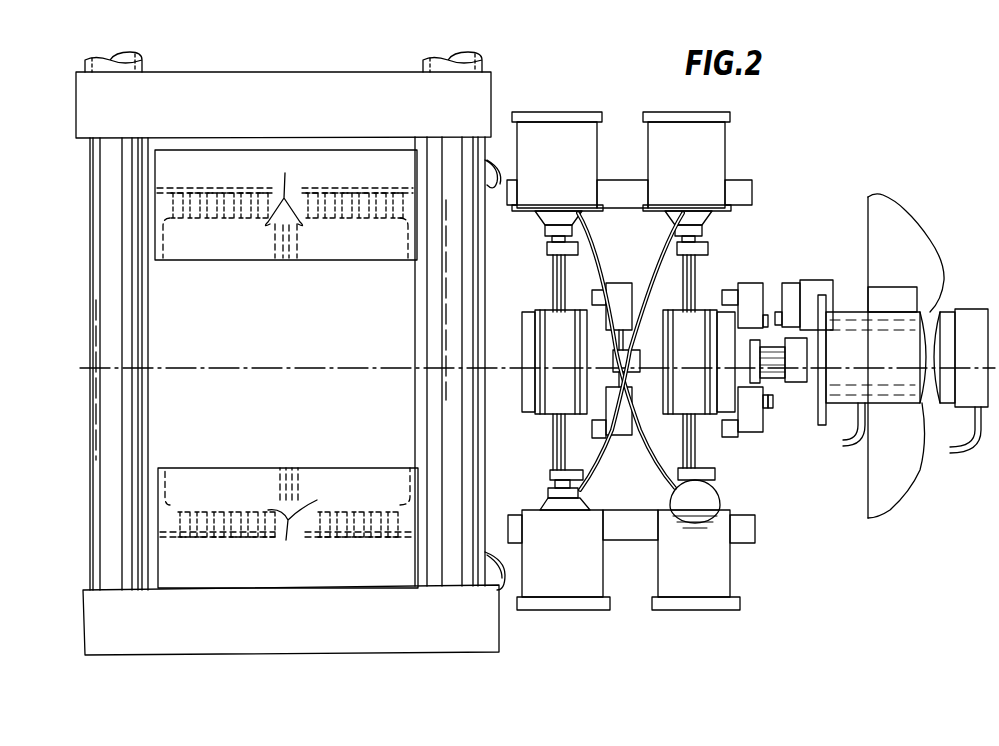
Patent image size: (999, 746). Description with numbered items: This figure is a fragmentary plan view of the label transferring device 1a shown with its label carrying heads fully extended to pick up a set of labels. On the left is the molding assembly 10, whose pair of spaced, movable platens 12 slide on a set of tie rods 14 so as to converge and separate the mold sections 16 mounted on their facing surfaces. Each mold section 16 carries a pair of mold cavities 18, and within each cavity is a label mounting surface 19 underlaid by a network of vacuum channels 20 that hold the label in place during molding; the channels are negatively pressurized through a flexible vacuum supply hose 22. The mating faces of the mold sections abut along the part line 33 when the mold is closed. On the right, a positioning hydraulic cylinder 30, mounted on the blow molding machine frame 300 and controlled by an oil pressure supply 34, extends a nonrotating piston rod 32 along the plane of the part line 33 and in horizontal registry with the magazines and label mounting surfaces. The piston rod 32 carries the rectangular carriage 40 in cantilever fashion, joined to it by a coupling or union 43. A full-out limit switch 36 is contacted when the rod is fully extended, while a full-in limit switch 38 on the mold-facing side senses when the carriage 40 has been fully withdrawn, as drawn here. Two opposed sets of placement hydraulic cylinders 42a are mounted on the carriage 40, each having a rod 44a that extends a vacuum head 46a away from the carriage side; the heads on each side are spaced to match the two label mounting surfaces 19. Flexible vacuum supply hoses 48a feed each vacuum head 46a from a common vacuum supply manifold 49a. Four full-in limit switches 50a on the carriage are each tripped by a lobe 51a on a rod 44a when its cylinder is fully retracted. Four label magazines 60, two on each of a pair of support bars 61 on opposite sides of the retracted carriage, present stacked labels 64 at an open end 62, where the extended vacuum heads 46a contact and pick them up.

The transferring device 1a is at (788, 165).
The molding assembly 10 is at (350, 70).
The platens 12 is at (222, 86).
The tie rods 14 is at (140, 422).
The mold sections 16 is at (286, 262).
The mold cavities 18 is at (212, 262).
The label mounting surface 19 is at (291, 356).
The vacuum channels 20 is at (203, 190).
The flexible vacuum supply hose 22 is at (495, 160).
The positioning hydraulic cylinder 30 is at (897, 403).
The piston rod 32 is at (778, 383).
The part line 33 is at (295, 365).
The oil pressure supply 34 is at (960, 447).
The full-out limit switch 36 is at (885, 287).
The full-in limit switch 38 is at (810, 283).
The carriage 40 is at (518, 385).
The placement hydraulic cylinders 42a is at (537, 310).
The coupling or union 43 is at (768, 408).
The rod 44a is at (548, 250).
The vacuum head 46a is at (578, 218).
The flexible vacuum supply hoses 48a is at (600, 250).
The vacuum supply manifold 49a is at (560, 352).
The full-in limit switches 50a is at (618, 290).
The lobe 51a is at (567, 256).
The label magazines 60 is at (590, 112).
The support bars 61 is at (625, 185).
The open end 62 is at (527, 207).
The labels 64 is at (697, 530).
The blow molding machine frame 300 is at (912, 497).